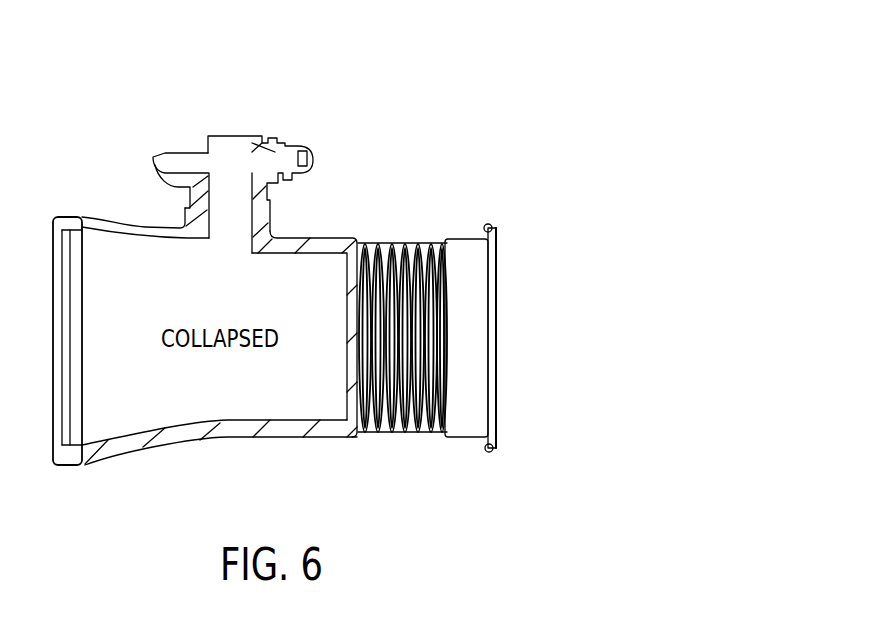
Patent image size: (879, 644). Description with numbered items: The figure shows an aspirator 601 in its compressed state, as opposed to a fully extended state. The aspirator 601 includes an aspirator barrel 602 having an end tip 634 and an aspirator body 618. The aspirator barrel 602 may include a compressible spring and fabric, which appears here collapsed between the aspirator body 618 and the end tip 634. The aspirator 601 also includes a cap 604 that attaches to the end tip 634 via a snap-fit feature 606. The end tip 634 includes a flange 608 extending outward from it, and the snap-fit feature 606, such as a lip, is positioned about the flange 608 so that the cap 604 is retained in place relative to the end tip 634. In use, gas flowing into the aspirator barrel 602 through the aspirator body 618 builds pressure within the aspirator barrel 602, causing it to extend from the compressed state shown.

The aspirator 601 is at (322, 60).
The aspirator barrel 602 is at (403, 242).
The cap 604 is at (496, 335).
The snap-fit feature 606 is at (488, 224).
The flange 608 is at (486, 441).
The aspirator body 618 is at (128, 222).
The end tip 634 is at (472, 240).